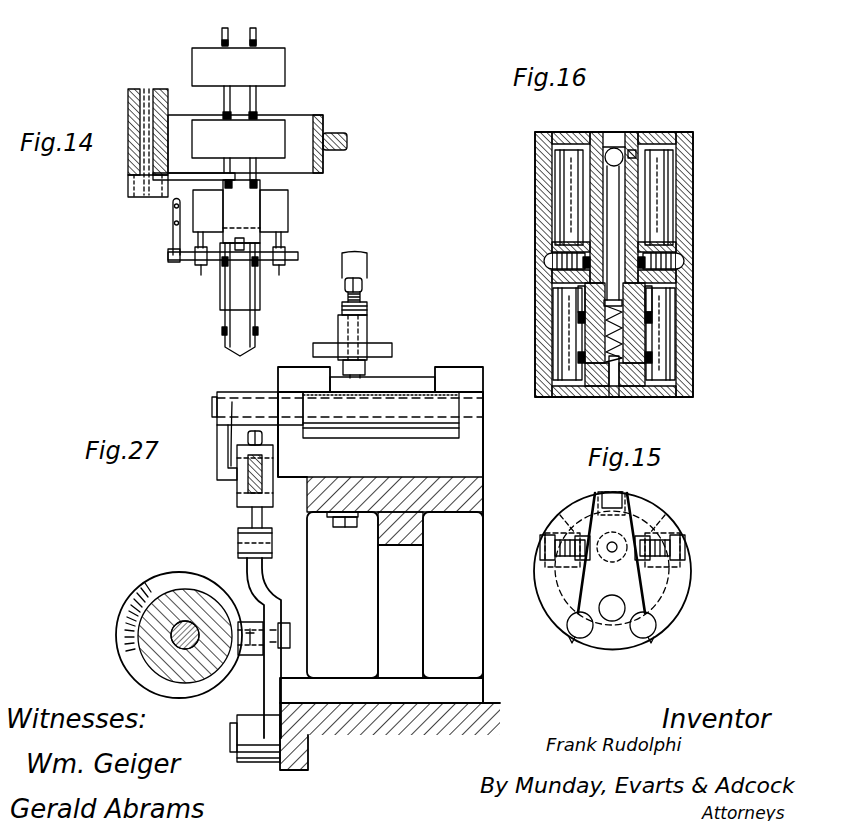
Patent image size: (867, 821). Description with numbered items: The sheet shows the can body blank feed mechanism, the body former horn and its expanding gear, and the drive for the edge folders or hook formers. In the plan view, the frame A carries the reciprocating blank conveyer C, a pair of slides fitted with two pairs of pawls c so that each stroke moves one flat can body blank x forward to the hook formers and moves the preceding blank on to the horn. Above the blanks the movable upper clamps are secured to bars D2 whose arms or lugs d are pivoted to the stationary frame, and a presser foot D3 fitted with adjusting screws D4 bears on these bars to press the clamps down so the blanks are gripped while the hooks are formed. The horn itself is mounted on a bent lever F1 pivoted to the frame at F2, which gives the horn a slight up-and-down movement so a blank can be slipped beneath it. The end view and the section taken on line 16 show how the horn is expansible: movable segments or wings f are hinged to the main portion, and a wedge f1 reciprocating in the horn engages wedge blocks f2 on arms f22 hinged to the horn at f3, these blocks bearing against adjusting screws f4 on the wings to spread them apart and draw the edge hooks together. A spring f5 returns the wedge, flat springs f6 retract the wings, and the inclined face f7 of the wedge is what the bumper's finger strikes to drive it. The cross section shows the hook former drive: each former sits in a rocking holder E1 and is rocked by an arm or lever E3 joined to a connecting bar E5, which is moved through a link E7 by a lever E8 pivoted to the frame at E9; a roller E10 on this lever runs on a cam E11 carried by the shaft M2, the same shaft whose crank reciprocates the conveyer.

In FIG. 14, the blank conveyer C is at (253, 31).
In FIG. 14, the pawls c is at (257, 43).
In FIG. 14, the can body blank x is at (240, 140).
In FIG. 14, the frame A is at (323, 164).
In FIG. 27, the frame A is at (357, 738).
In FIG. 14, the pivot of bent lever F2 is at (140, 152).
In FIG. 14, the bent lever F1 is at (160, 208).
In FIG. 16, the bent lever F1 is at (536, 168).
In FIG. 15, the bent lever F1 is at (618, 494).
In FIG. 16, the movable segments or wings of the horn f is at (543, 203).
In FIG. 15, the movable segments or wings of the horn f is at (562, 519).
In FIG. 16, the adjusting screws f4 is at (541, 260).
In FIG. 15, the adjusting screws f4 is at (545, 537).
In FIG. 16, the inclined face of wedge f7 is at (613, 150).
In FIG. 16, the wedge f1 is at (622, 195).
In FIG. 16, the wedge blocks f2 is at (590, 290).
In FIG. 16, the arms f22 is at (600, 302).
In FIG. 16, the flat springs f6 is at (588, 318).
In FIG. 16, the hinge of arms f3 is at (586, 330).
In FIG. 16, the spring f5 is at (626, 356).
In FIG. 15, the section line 16— 16 is at (596, 547).
In FIG. 27, the movable bar D2 is at (400, 378).
In FIG. 27, the presser foot D3 is at (366, 328).
In FIG. 27, the adjusting screws D4 is at (362, 287).
In FIG. 27, the arms or lugs d is at (313, 370).
In FIG. 27, the rocking holder E1 is at (350, 415).
In FIG. 27, the arms or levers E3 is at (222, 432).
In FIG. 27, the connecting bar E5 is at (252, 474).
In FIG. 27, the link E7 is at (238, 533).
In FIG. 27, the lever E8 is at (270, 605).
In FIG. 27, the roller E10 is at (246, 656).
In FIG. 27, the pivot of lever E9 is at (233, 734).
In FIG. 27, the cam E11 is at (150, 596).
In FIG. 27, the shaft M2 is at (183, 626).